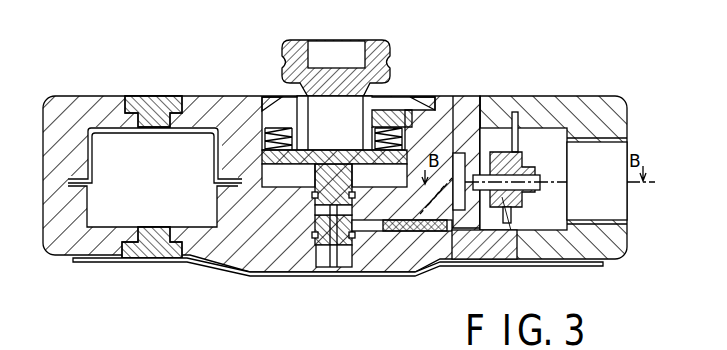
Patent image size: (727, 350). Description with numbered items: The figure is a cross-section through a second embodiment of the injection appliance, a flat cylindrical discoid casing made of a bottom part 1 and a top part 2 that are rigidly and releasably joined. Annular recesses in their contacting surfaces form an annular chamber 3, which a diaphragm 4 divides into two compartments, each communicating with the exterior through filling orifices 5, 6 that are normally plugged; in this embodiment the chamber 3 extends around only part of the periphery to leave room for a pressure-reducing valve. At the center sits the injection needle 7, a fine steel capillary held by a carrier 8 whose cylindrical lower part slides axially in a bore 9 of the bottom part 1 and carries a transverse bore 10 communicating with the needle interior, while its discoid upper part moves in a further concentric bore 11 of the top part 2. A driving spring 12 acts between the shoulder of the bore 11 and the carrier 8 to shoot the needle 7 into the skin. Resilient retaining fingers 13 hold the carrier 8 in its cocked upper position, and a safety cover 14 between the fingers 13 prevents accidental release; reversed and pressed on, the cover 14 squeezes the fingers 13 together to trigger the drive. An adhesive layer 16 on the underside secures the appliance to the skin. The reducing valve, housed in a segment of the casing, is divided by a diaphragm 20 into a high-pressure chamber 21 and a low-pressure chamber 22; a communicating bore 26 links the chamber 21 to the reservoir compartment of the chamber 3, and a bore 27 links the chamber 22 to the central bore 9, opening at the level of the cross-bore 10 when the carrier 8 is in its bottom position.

The bottom part 1 is at (63, 252).
The top part 2 is at (90, 103).
The annular chamber 3 is at (184, 220).
The diaphragm 4 is at (199, 137).
The filling orifice 5 is at (137, 257).
The filling orifice 6 is at (173, 96).
The injection needle 7 is at (331, 259).
The carrier 8 is at (318, 262).
The bore 9 is at (338, 250).
The bore 10 is at (310, 222).
The further concentric bore 11 is at (420, 140).
The driving spring 12 is at (408, 152).
The resilient retaining fingers 13 is at (368, 108).
The safety cover 14 is at (376, 42).
The adhesive layer 16 is at (396, 277).
The diaphragm 20 is at (510, 150).
The high-pressure chamber 21 is at (463, 153).
The low-pressure chamber 22 is at (496, 229).
The communicating bore 26 is at (450, 215).
The bore 27 is at (418, 234).